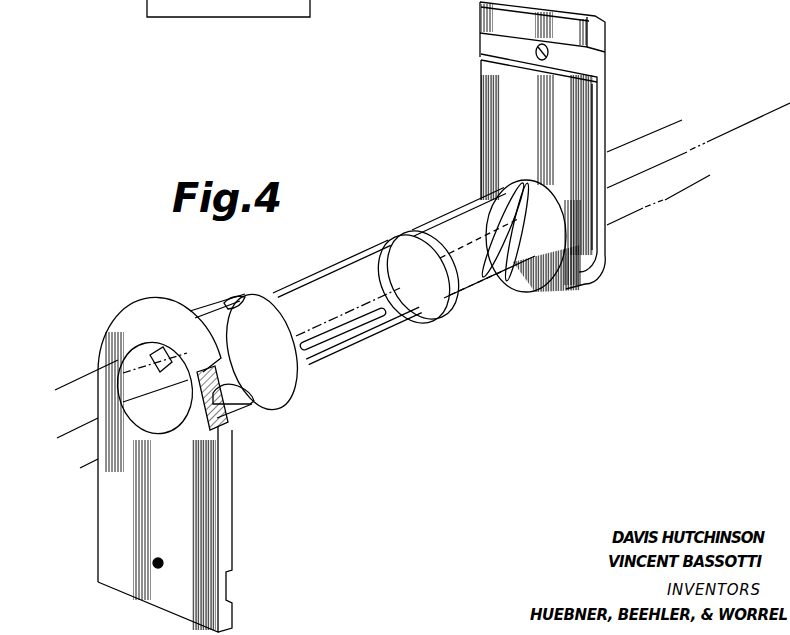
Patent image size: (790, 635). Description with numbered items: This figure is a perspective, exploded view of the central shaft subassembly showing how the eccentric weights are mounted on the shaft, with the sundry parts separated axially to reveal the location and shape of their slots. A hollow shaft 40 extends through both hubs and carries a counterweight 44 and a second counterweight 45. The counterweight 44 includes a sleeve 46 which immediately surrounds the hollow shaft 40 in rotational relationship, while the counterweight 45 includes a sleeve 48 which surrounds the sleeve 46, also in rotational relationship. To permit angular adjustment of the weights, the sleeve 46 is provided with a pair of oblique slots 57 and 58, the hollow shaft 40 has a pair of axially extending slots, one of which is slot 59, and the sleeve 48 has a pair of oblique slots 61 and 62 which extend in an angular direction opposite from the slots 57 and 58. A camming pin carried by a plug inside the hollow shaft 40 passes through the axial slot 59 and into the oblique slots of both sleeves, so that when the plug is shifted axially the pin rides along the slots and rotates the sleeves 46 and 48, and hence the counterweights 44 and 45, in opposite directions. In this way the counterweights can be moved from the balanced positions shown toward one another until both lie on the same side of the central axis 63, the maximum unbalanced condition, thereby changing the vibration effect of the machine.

The hollow shaft 40 is at (336, 262).
The counterweight 44 is at (607, 118).
The second counterweight 45 is at (233, 514).
The sleeve 46 is at (462, 204).
The sleeve 48 is at (263, 294).
The oblique slot 57 is at (512, 284).
The oblique slot 58 is at (466, 300).
The axially extending slot 59 is at (378, 332).
The oblique slot 61 is at (250, 406).
The oblique slot 62 is at (228, 298).
The central axis 63 is at (693, 152).